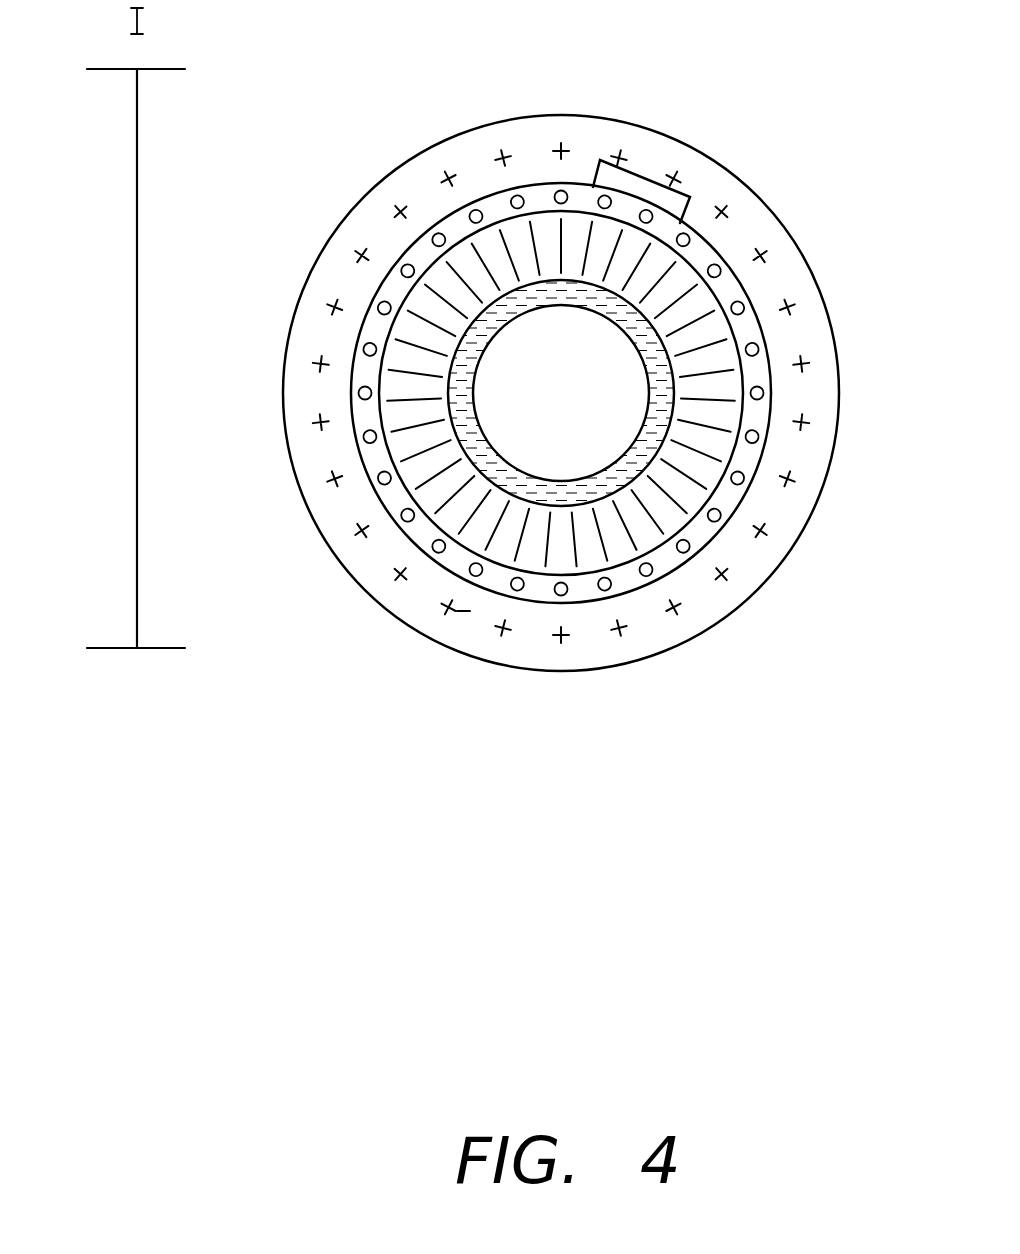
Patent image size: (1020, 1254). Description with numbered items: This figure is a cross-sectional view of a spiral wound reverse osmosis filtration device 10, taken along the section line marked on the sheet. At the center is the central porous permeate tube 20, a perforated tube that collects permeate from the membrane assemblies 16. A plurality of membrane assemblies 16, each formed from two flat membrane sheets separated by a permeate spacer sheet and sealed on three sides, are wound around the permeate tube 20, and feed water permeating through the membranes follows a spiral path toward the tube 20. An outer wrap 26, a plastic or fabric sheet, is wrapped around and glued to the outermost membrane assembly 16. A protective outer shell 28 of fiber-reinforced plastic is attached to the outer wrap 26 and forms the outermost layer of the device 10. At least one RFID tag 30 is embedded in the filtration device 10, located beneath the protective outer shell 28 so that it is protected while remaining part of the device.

The reverse osmosis filtration device 10 is at (573, 413).
The membrane assembly 16 is at (617, 533).
The central porous permeate tube 20 is at (555, 498).
The outer wrap 26 is at (745, 464).
The protective outer shell 28 is at (817, 335).
The RFID tag 30 is at (673, 200).